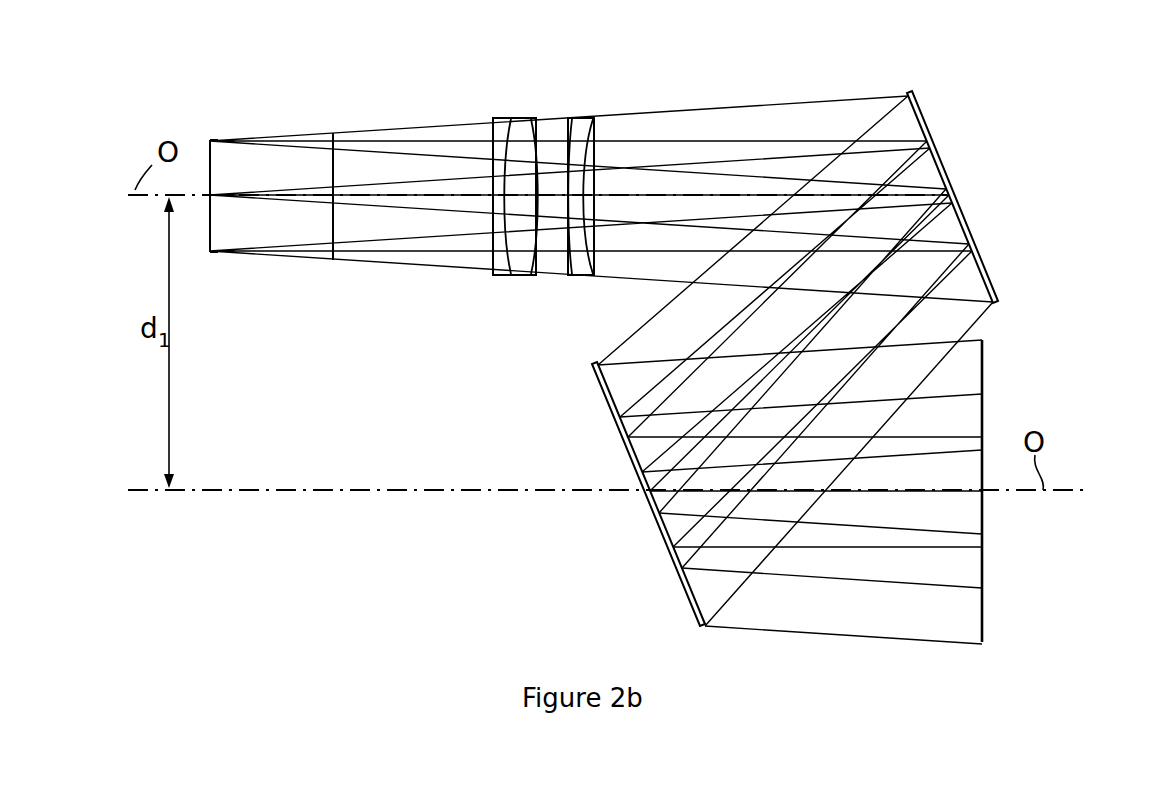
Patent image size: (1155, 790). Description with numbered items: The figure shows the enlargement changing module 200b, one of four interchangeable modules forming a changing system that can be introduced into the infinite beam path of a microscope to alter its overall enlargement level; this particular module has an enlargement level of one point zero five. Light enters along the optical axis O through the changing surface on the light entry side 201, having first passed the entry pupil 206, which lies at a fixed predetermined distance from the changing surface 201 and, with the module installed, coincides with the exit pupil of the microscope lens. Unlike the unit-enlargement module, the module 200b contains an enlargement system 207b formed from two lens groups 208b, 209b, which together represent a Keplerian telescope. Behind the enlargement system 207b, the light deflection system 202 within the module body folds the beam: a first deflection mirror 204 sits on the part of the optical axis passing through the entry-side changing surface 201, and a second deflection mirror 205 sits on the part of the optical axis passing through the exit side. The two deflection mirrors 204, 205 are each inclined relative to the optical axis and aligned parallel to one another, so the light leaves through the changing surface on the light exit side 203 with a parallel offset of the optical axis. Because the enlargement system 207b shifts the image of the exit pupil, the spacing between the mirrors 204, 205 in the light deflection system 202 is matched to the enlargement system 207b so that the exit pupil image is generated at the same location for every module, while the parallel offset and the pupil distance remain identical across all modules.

The enlargement changing module 200b is at (738, 99).
The changing surface on the light entry side 201 is at (335, 165).
The light deflection system 202 is at (1045, 310).
The changing surface on the light exit side 203 is at (982, 543).
The first deflection mirror 204 is at (963, 218).
The second deflection mirror 205 is at (672, 547).
The entry pupil 206 is at (208, 162).
The enlargement system 207b is at (532, 186).
The lens group 208b is at (520, 276).
The lens group 209b is at (580, 276).